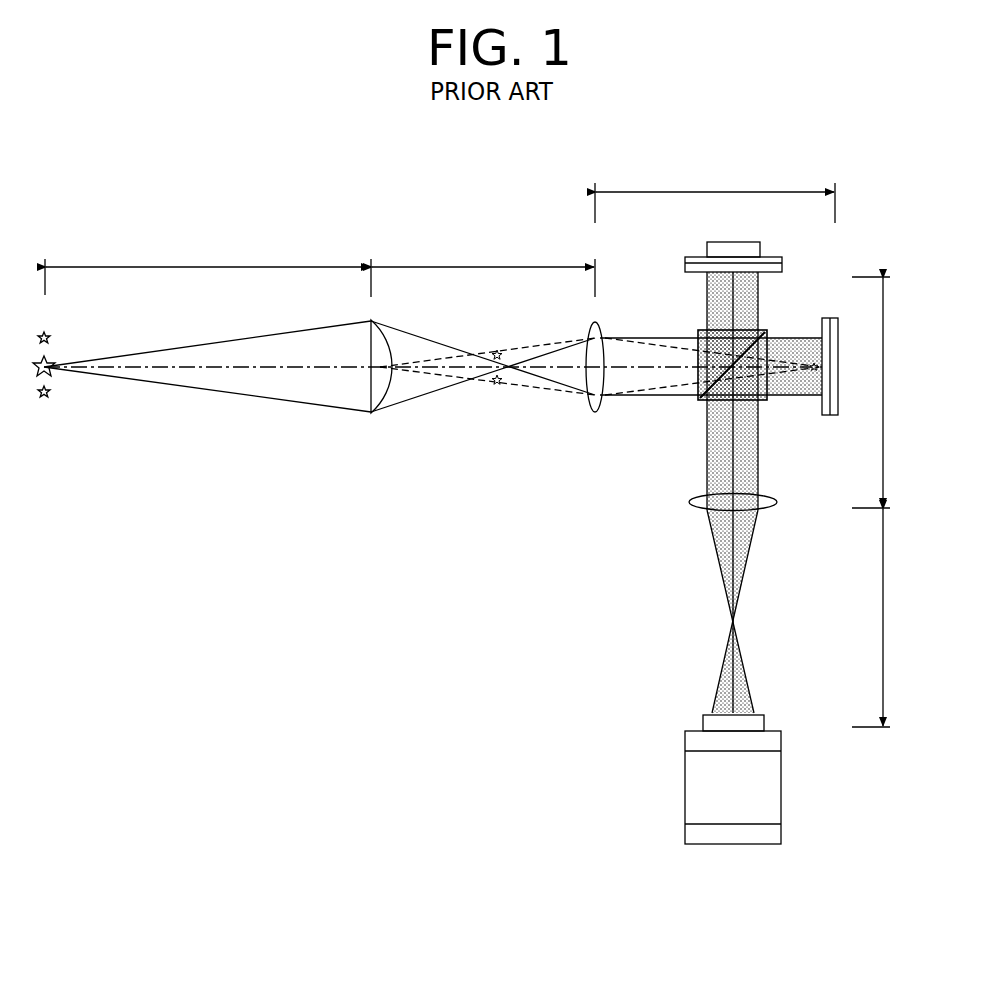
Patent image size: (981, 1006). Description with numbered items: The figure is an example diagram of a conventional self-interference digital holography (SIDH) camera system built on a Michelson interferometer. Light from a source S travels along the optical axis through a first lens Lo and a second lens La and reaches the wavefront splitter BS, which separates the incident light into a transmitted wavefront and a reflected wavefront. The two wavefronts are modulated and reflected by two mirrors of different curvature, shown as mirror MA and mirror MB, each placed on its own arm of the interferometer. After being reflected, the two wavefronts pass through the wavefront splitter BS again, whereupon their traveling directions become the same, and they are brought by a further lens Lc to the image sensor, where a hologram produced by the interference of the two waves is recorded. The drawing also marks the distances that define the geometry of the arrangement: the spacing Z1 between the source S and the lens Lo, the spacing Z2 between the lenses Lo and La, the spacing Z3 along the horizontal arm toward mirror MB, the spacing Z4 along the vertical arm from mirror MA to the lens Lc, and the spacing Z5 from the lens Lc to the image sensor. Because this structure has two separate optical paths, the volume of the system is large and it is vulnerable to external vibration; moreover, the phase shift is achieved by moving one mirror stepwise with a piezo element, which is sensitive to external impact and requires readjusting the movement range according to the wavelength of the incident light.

The light source (object) S is at (44, 349).
The distance between source and objective lens Z1 is at (208, 268).
The distance between objective lens and lens La Z2 is at (483, 268).
The distance between lens La and mirror MB Z3 is at (715, 193).
The distance between mirror MA and lens Lc Z4 is at (884, 392).
The distance between lens Lc and camera Z5 is at (884, 618).
The objective lens Lo is at (373, 382).
The collimating lens La is at (593, 383).
The camera lens Lc is at (719, 504).
The mirror A MA is at (748, 259).
The mirror B MB is at (827, 351).
The beam splitter BS is at (744, 380).